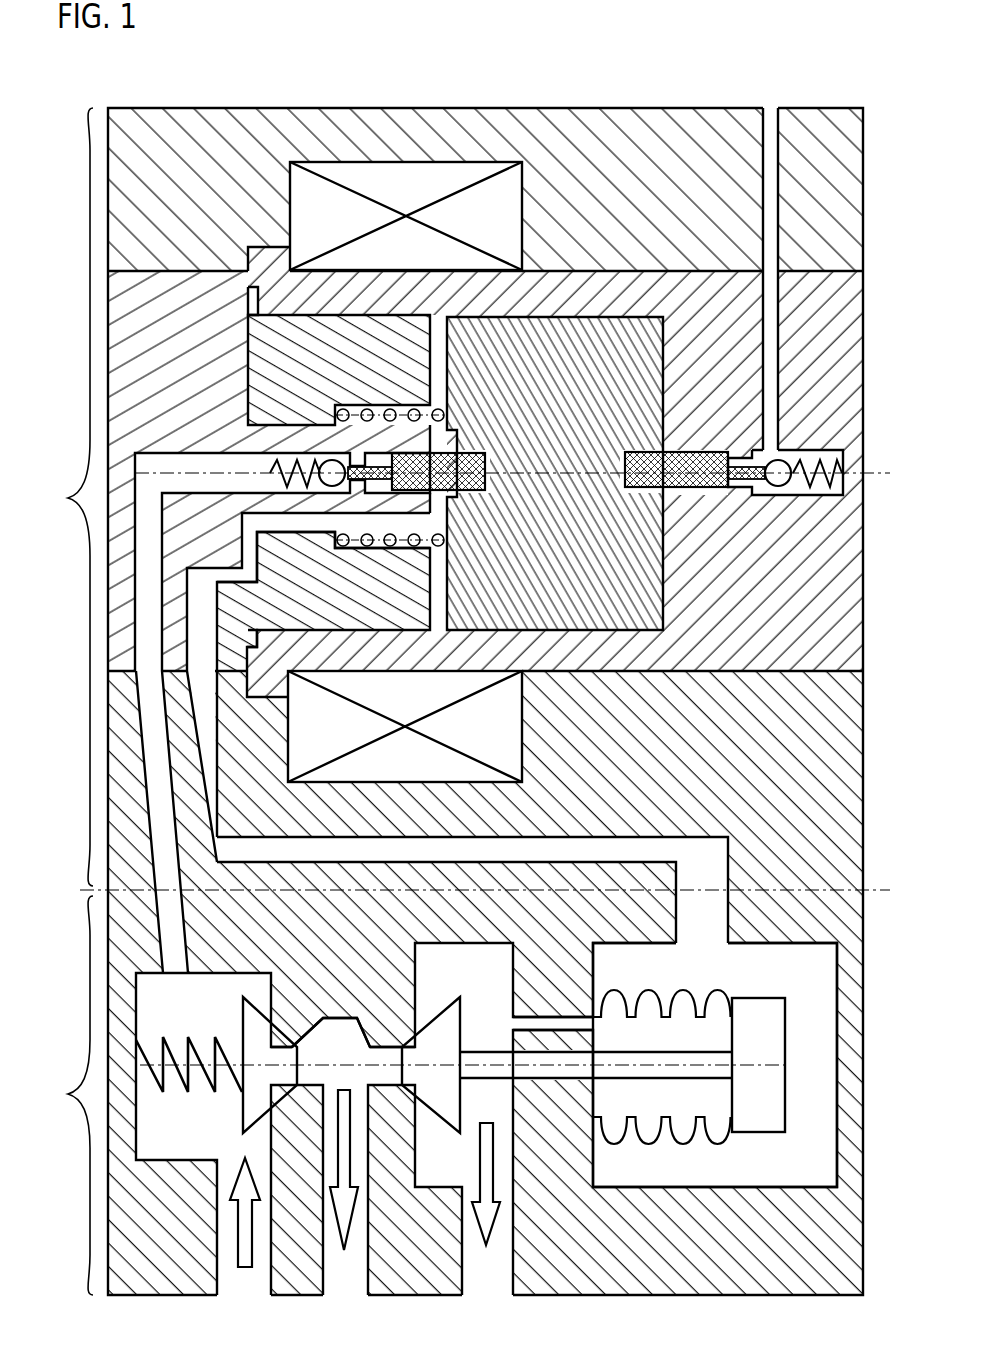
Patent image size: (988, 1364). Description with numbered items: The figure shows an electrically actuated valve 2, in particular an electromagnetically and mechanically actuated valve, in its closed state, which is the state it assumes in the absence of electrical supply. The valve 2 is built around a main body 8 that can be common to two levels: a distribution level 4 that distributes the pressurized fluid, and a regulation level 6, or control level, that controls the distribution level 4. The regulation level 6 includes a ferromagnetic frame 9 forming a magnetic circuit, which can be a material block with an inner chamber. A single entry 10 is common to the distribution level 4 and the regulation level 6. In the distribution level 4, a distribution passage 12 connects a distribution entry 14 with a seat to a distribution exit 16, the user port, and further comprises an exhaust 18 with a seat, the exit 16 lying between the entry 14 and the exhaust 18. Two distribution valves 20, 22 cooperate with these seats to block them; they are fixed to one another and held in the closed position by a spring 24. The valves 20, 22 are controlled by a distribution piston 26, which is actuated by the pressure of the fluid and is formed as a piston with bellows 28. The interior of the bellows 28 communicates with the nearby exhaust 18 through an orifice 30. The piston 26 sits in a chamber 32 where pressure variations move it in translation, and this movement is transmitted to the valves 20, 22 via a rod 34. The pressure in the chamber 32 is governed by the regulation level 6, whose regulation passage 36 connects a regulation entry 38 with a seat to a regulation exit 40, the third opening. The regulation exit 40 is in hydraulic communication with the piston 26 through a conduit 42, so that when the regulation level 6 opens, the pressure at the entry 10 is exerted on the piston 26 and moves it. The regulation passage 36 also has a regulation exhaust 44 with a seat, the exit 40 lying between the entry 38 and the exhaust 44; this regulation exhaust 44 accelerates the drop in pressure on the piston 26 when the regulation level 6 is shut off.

The valve 2 is at (596, 85).
The distribution level 4 is at (71, 1095).
The regulation level 6 is at (446, 497).
The main body 8 is at (171, 195).
The ferromagnetic frame 9 is at (761, 616).
The entry 10 is at (231, 1295).
The distribution passage 12 is at (327, 1045).
The distribution entry 14 is at (283, 1040).
The distribution exit 16 is at (333, 1295).
The exhaust 18 is at (472, 1295).
The distribution valve 20 is at (249, 1060).
The distribution valve 22 is at (427, 1060).
The spring 24 is at (180, 1068).
The distribution piston 26 is at (744, 1113).
The bellows 28 is at (722, 1139).
The orifice 30 is at (515, 1017).
The chamber 32 is at (792, 985).
The rod 34 is at (557, 1070).
The regulation passage 36 is at (443, 507).
The regulation entry 38 is at (348, 466).
The regulation exit 40 is at (202, 593).
The conduit 42 is at (689, 870).
The regulation exhaust 44 is at (769, 107).